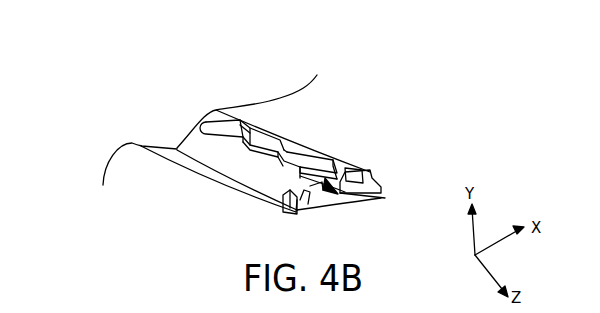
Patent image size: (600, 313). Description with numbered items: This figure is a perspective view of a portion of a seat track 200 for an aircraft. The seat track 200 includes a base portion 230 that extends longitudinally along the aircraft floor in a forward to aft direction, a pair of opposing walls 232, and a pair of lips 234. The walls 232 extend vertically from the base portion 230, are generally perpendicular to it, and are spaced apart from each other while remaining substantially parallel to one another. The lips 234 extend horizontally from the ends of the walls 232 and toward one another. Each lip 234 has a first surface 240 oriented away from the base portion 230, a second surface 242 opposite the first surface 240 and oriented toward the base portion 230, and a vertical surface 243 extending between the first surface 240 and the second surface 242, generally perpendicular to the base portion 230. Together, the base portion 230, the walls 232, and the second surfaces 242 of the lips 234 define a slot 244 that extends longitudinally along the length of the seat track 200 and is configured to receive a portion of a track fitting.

The seat track 200 is at (163, 110).
The base portion 230 is at (334, 200).
The opposing walls 232 is at (366, 176).
The lips 234 is at (351, 166).
The first surface 240 is at (322, 152).
The second surface 242 is at (310, 196).
The vertical surface 243 is at (280, 141).
The slot 244 is at (343, 194).